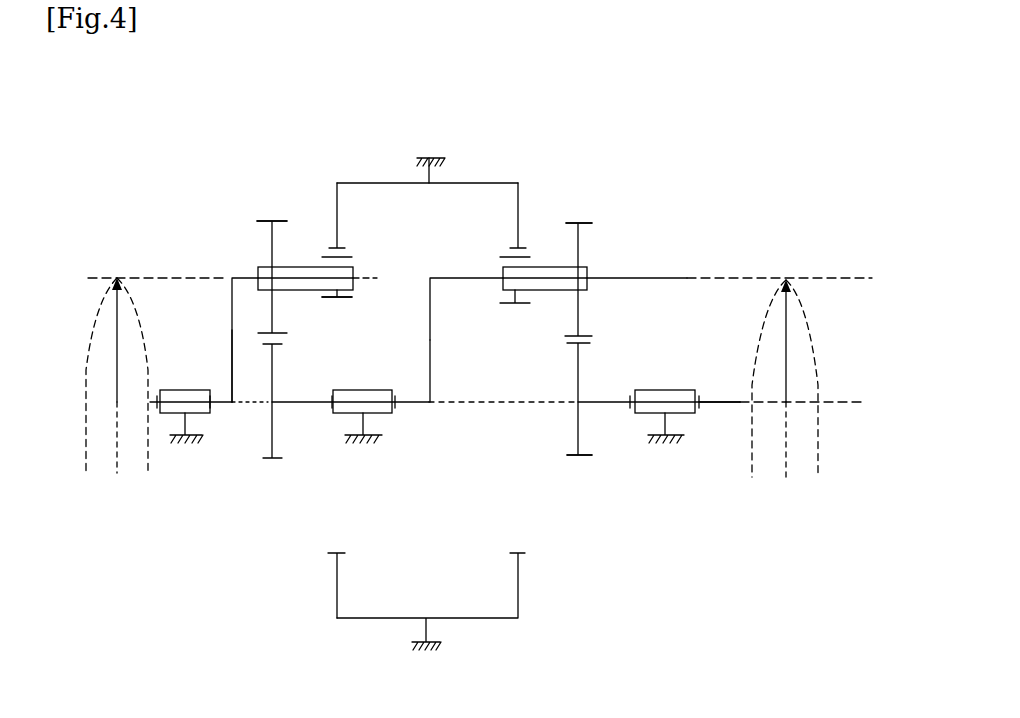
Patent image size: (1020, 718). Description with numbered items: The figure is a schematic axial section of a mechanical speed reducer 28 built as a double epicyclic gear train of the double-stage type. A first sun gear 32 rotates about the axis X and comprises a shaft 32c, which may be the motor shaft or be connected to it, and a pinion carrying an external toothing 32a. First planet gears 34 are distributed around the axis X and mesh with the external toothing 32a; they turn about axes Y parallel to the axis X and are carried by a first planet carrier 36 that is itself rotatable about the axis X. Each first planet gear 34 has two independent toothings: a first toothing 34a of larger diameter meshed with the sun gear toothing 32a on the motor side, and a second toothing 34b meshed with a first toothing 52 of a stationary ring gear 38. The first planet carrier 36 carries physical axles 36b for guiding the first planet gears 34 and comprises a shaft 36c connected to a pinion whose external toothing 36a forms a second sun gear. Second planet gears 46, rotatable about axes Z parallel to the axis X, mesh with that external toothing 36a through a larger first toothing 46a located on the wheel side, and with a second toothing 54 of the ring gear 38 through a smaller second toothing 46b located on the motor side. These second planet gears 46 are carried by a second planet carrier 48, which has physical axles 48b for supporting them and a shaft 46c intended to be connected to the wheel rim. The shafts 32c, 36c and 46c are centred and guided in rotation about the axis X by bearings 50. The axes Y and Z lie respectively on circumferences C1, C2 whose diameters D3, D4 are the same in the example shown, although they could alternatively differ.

The mechanical speed reducer 28 is at (722, 105).
The first sun gear 32 is at (592, 466).
The external toothing 32a is at (572, 457).
The shaft 32c is at (722, 405).
The first planet gears 34 is at (592, 240).
The first toothing 34a is at (577, 222).
The second toothing 34b is at (510, 303).
The first planet carrier 36 is at (628, 290).
The external toothing 36a is at (275, 460).
The physical axles 36b is at (458, 277).
The shaft 36c is at (415, 404).
The stationary ring gear 38 is at (514, 170).
The second planet gears 46 is at (256, 238).
The first toothing 46a is at (275, 218).
The second toothing 46b is at (345, 298).
The shaft 46c is at (218, 392).
The second planet carrier 48 is at (236, 412).
The physical axles 48b is at (365, 276).
The bearings 50 is at (170, 378).
The first toothing 52 is at (523, 556).
The second toothing 54 is at (340, 550).
The axis X is at (850, 401).
The axes Y is at (842, 279).
The axes Z is at (117, 277).
The circumference C1 is at (818, 355).
The circumference C2 is at (85, 367).
The diameter D3 is at (787, 413).
The diameter D4 is at (117, 340).